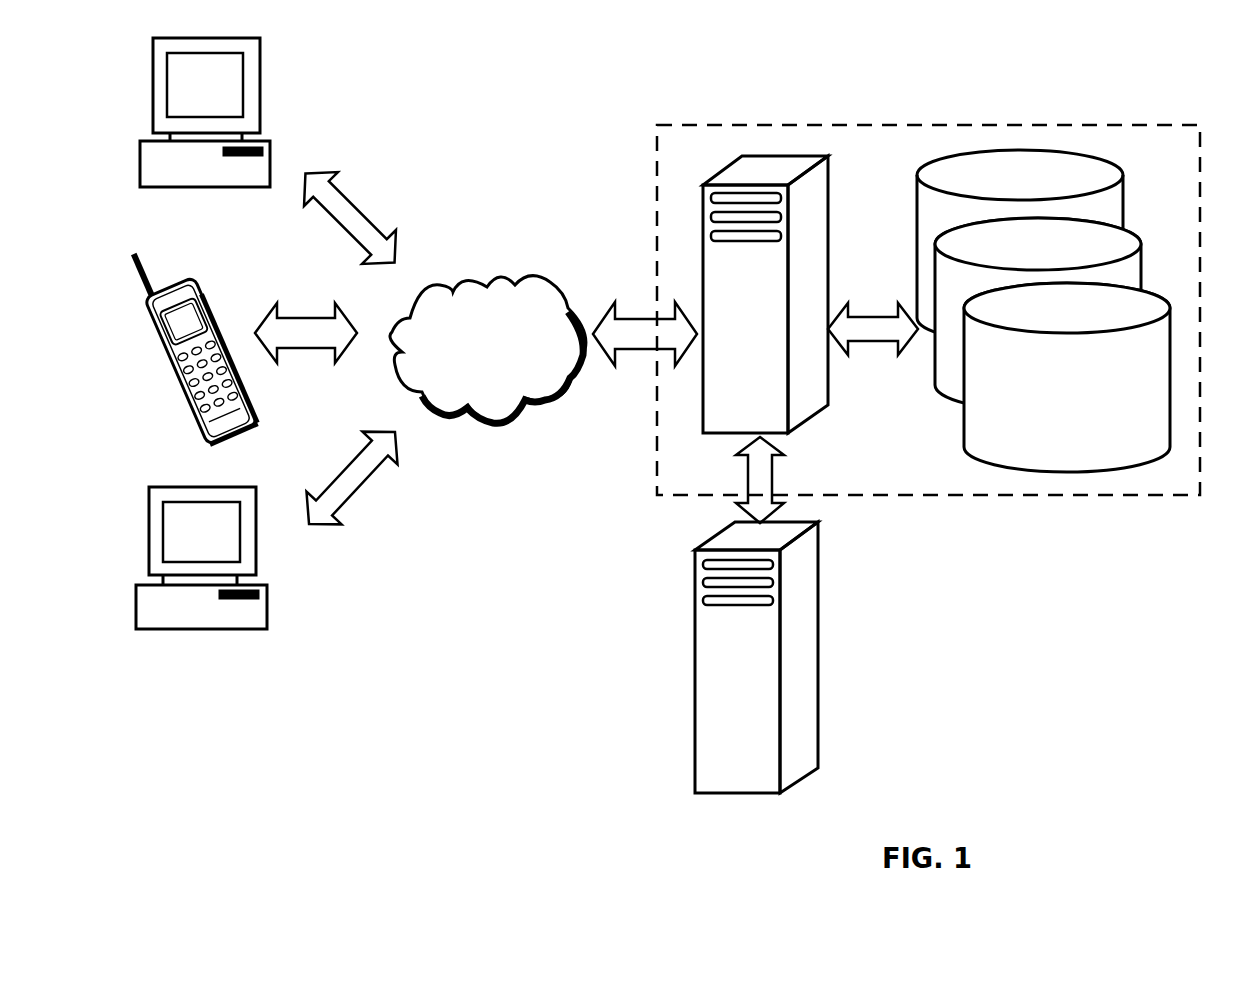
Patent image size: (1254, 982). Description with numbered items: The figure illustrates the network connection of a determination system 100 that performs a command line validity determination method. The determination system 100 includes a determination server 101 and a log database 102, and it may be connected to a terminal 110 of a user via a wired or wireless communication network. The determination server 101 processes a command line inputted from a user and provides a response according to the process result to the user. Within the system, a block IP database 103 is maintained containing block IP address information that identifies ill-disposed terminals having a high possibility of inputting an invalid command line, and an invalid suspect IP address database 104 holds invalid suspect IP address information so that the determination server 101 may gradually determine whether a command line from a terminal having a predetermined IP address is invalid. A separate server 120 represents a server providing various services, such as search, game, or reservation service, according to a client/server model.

The determination system 100 is at (1050, 496).
The determination server 101 is at (766, 164).
The log database 102 is at (1150, 292).
The block IP database 103 is at (1045, 215).
The invalid suspect IP address database 104 is at (957, 165).
The terminal 110 is at (223, 630).
The server 120 is at (732, 794).